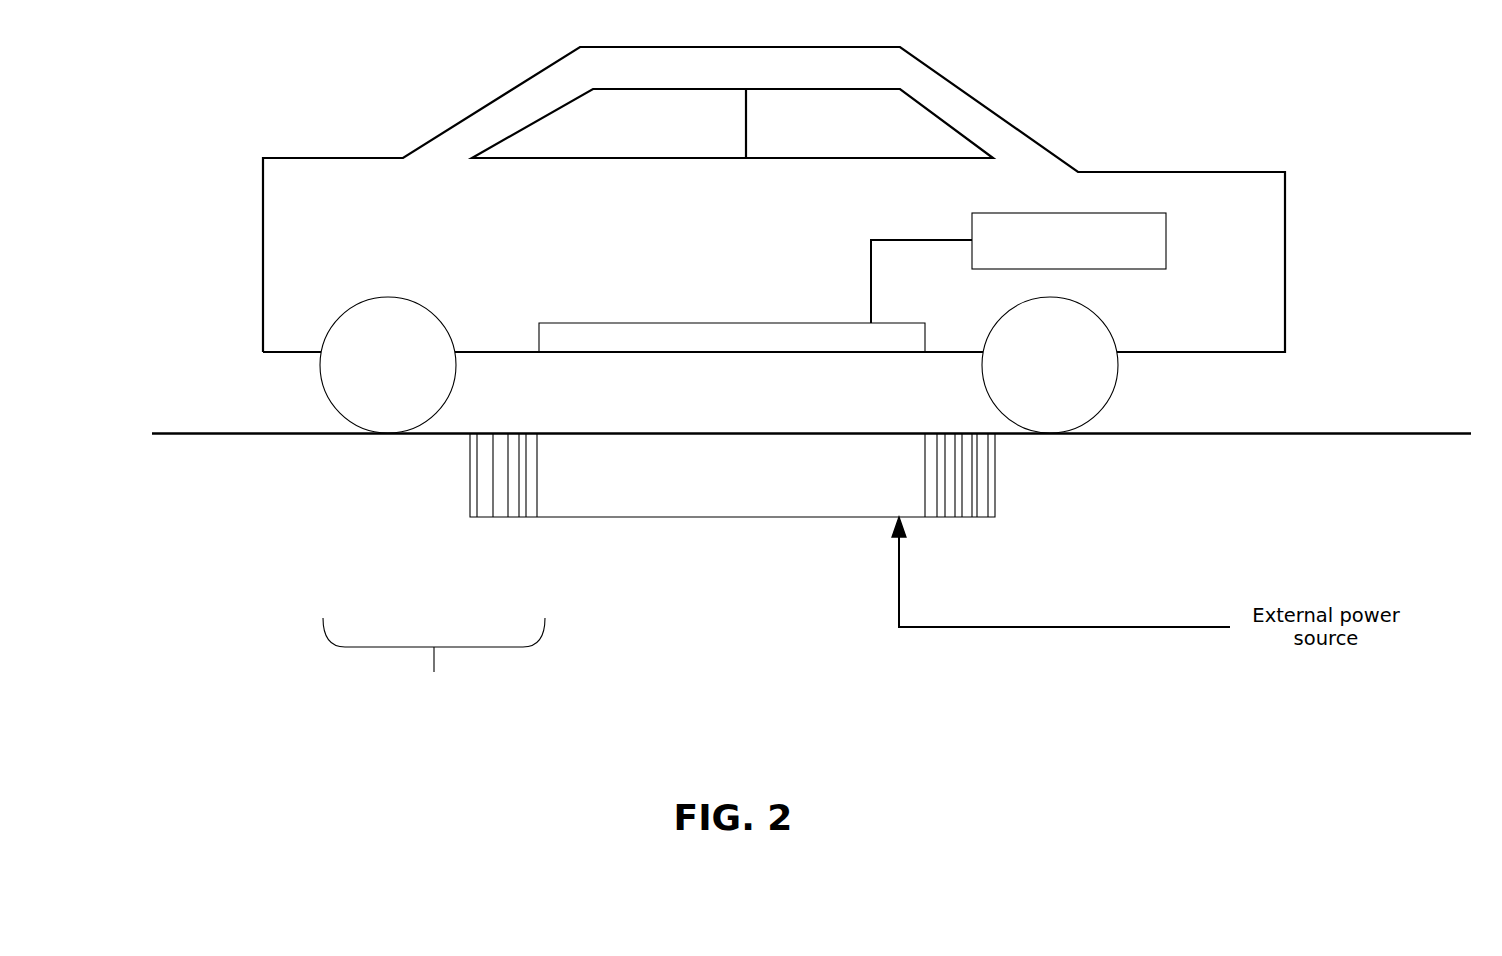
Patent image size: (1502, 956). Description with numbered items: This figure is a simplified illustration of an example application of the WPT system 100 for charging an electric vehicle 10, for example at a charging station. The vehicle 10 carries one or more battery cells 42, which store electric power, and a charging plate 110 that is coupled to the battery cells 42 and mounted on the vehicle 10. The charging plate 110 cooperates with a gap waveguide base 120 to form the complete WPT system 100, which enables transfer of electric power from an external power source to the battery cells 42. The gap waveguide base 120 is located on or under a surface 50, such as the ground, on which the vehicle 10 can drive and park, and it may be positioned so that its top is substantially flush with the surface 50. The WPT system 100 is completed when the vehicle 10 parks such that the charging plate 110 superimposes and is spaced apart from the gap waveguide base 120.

The electric vehicle 10 is at (734, 78).
The battery cells 42 is at (1018, 268).
The surface 50 is at (208, 433).
The WPT system 100 is at (434, 666).
The charging plate 110 is at (540, 335).
The gap waveguide base 120 is at (623, 517).